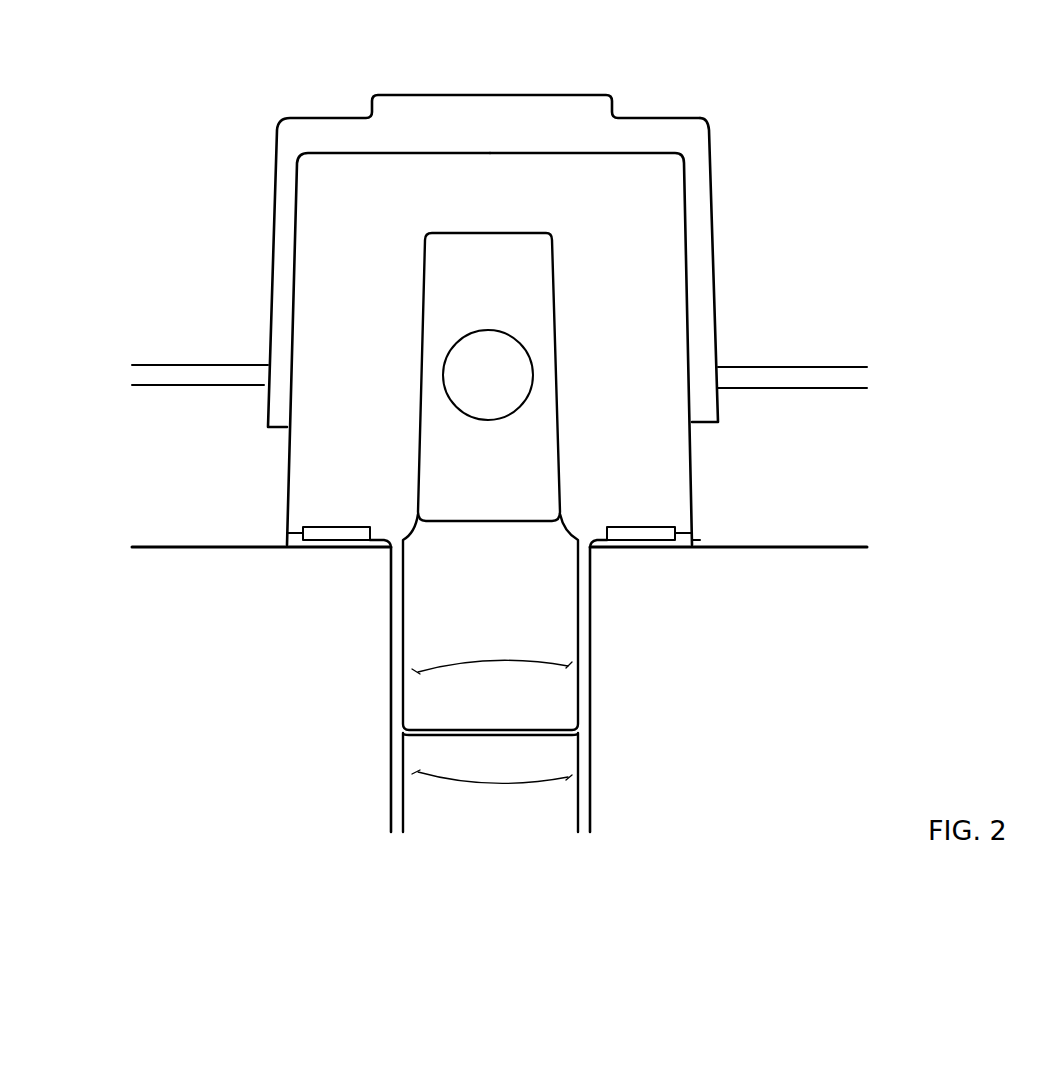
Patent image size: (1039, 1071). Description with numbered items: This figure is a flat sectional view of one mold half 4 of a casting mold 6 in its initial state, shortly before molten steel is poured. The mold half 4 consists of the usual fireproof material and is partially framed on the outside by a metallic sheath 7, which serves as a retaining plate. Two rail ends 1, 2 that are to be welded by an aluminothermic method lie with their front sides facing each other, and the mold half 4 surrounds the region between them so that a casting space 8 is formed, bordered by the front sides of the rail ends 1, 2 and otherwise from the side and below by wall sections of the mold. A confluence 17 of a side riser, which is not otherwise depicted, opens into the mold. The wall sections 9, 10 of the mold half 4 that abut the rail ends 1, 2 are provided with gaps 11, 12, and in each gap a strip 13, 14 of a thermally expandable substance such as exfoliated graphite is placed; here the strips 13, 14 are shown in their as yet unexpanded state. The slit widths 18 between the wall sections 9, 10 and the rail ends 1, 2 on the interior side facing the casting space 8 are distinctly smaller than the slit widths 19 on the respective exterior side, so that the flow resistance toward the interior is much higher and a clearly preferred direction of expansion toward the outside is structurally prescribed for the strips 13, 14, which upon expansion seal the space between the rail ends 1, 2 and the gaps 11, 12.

The rail end 1 is at (308, 698).
The rail end 2 is at (705, 703).
The mold half 4 is at (538, 206).
The casting mold 6 is at (581, 80).
The metallic sheath 7 is at (696, 196).
The casting space 8 is at (498, 612).
The wall section 9 is at (360, 458).
The wall section 10 is at (664, 367).
The gap 11 is at (634, 516).
The gap 12 is at (336, 515).
The strip 13 is at (663, 537).
The strip 14 is at (318, 535).
The confluence of a side riser 17 is at (496, 370).
The slit width 18 is at (602, 557).
The slit width 19 is at (708, 548).